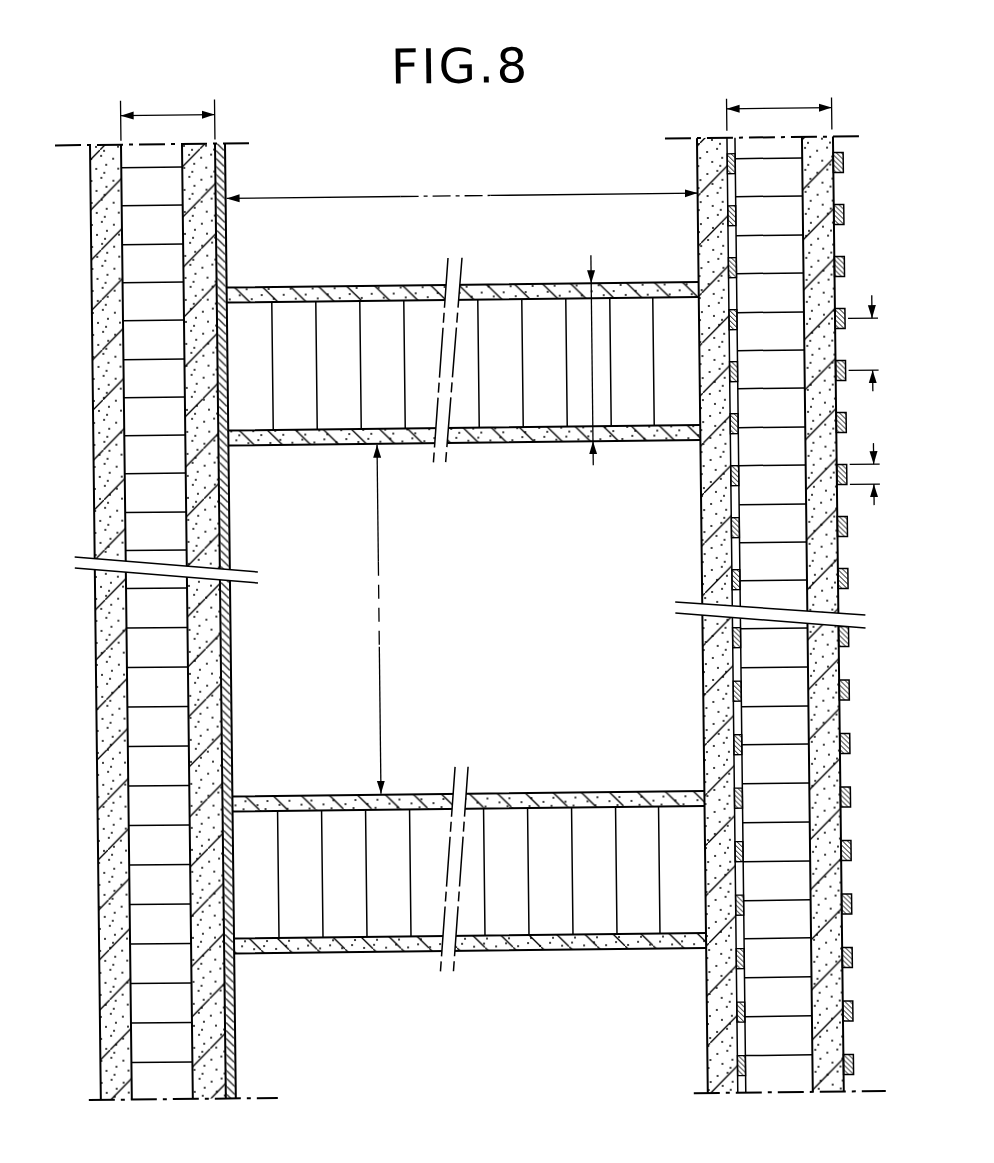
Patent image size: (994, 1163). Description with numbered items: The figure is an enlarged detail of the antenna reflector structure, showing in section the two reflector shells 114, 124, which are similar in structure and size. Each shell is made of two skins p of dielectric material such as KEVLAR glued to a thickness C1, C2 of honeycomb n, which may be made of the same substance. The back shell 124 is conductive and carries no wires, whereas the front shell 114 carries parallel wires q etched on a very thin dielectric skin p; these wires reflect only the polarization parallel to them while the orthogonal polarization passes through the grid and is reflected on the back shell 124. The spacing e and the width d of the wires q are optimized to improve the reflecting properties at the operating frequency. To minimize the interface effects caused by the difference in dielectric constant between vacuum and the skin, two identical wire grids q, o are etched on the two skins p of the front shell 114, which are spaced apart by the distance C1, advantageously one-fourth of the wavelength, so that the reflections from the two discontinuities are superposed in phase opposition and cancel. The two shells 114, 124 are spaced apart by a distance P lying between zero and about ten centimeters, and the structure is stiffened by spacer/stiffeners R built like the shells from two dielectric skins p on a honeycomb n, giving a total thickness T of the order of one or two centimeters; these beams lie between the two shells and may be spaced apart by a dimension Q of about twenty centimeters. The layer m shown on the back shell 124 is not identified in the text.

The front shell 114 is at (848, 271).
The back shell 124 is at (87, 339).
The skin p is at (379, 288).
The honeycomb n is at (287, 320).
The conductive film m is at (223, 622).
The wire grid o is at (731, 534).
The parallel wires q is at (840, 586).
The spacer/stiffener R is at (512, 283).
The spacing distance between reflector shells P is at (556, 197).
The spacer/stiffener spacing dimension Q is at (374, 681).
The total thickness of spacer/stiffener T is at (591, 339).
The thickness of front shell honeycomb C1 is at (767, 110).
The thickness of back shell honeycomb C2 is at (152, 98).
The spacing of wires e is at (871, 349).
The width of wires d is at (874, 482).